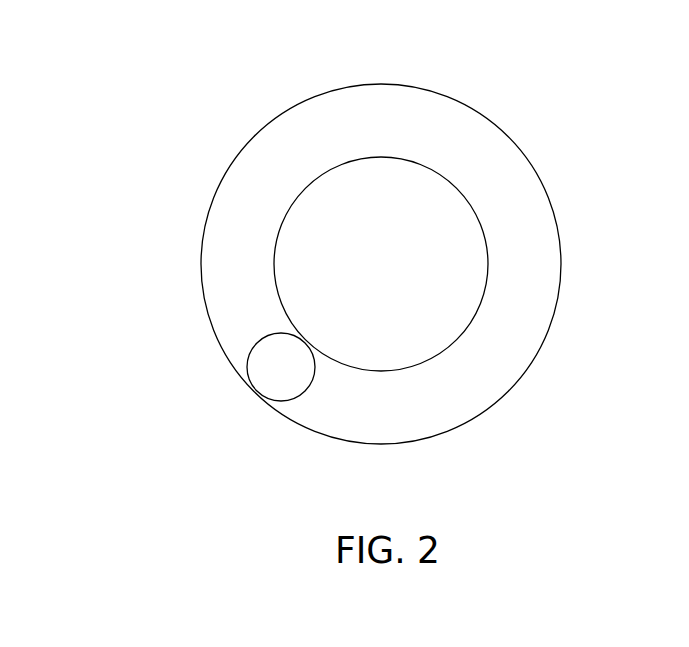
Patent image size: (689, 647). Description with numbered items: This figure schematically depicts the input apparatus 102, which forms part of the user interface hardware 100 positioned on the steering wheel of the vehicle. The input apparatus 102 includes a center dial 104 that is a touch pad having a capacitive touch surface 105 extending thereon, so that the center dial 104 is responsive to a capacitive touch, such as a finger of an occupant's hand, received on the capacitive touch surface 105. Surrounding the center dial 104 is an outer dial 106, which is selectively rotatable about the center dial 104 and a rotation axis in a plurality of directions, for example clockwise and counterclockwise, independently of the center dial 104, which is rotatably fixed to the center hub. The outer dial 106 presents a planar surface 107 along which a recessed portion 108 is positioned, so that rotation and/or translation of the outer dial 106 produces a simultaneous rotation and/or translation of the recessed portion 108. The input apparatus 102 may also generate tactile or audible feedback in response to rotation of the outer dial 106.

The user interface hardware 100 is at (107, 97).
The input apparatus 102 is at (224, 144).
The center dial 104 is at (480, 256).
The capacitive touch surface 105 is at (403, 281).
The outer dial 106 is at (515, 362).
The planar surface 107 is at (403, 137).
The recessed portion 108 is at (263, 379).